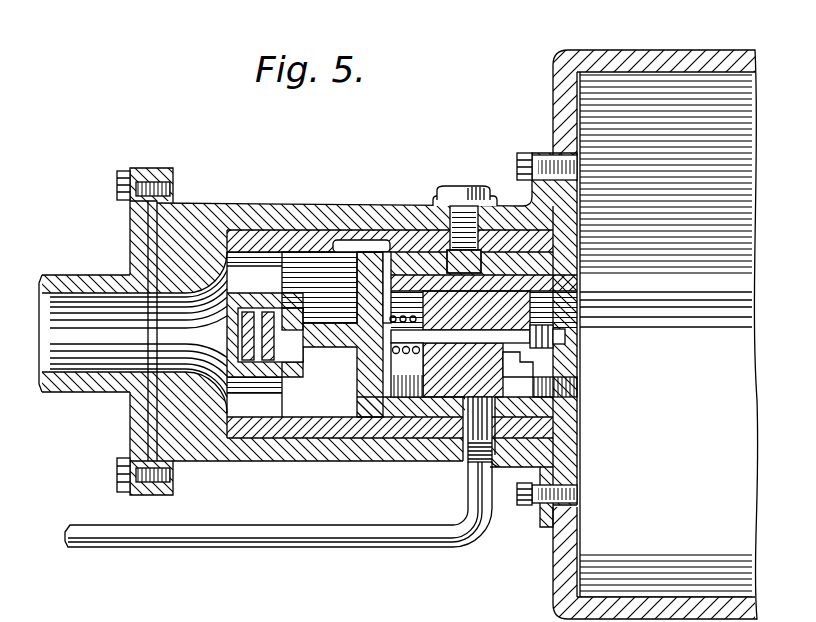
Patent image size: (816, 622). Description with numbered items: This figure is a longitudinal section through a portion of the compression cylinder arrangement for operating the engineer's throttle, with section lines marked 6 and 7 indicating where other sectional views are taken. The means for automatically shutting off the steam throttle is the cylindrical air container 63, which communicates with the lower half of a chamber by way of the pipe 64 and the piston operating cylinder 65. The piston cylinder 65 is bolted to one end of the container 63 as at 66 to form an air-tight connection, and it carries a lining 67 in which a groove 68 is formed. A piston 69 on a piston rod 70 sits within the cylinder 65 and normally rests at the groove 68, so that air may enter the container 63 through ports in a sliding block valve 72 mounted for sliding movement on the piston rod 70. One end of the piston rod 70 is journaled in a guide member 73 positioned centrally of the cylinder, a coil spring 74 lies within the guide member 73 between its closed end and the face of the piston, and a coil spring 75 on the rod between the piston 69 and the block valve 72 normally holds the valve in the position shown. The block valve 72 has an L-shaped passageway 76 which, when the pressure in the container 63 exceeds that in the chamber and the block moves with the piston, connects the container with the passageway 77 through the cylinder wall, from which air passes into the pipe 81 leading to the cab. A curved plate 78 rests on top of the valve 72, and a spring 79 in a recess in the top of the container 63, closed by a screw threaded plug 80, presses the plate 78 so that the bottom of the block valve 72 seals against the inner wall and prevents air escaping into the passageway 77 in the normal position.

The air container 63 is at (628, 50).
The pipe 64 is at (75, 274).
The piston operating cylinder 65 is at (237, 206).
The bolted connection 66 is at (548, 155).
The lining 67 is at (334, 242).
The groove 68 is at (373, 247).
The piston 69 is at (360, 358).
The piston rod 70 is at (318, 347).
The sliding block valve 72 is at (537, 370).
The guide member 73 is at (235, 336).
The coil spring 74 is at (252, 350).
The coil spring 75 is at (424, 362).
The L-shaped passageway 76 is at (578, 373).
The passageway 77 is at (455, 462).
The plate 78 is at (587, 290).
The spring 79 is at (540, 340).
The screw threaded plug 80 is at (470, 194).
The pipe 81 is at (245, 525).
The section line 6 is at (462, 575).
The section line 7 is at (328, 478).